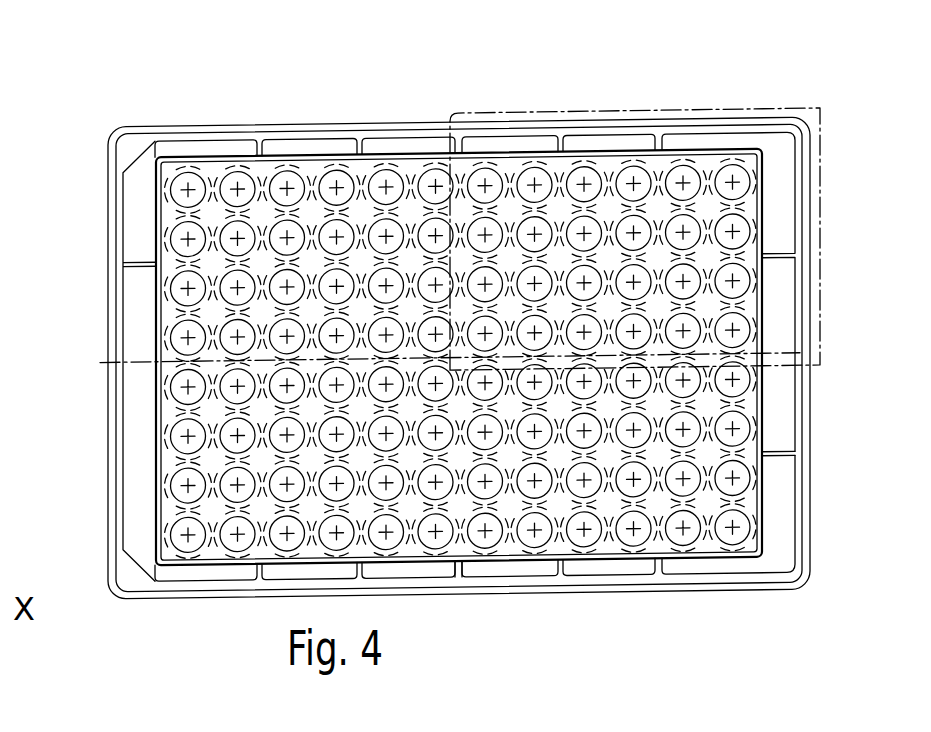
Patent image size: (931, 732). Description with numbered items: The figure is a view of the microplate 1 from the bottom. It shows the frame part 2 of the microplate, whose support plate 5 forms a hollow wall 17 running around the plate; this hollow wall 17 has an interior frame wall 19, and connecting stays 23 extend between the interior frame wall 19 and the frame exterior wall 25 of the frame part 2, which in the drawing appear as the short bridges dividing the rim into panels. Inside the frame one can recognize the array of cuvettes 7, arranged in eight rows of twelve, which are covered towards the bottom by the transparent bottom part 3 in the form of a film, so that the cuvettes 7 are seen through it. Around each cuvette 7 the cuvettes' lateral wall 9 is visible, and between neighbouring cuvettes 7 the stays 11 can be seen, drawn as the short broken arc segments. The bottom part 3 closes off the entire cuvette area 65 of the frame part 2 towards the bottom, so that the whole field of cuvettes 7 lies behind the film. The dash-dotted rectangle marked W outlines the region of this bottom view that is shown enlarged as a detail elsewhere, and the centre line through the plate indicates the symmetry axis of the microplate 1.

The microplate 1 is at (642, 629).
The frame part 2 is at (783, 498).
The bottom part 3 is at (720, 557).
The support plate 5 is at (797, 200).
The cuvettes 7 is at (730, 333).
The lateral wall 9 is at (728, 162).
The stays 11 is at (605, 168).
The hollow wall 17 is at (772, 415).
The interior frame wall 19 is at (758, 537).
The connecting stays 23 is at (462, 578).
The frame exterior wall 25 is at (578, 578).
The cuvette area 65 is at (308, 262).
The detail window W is at (813, 108).